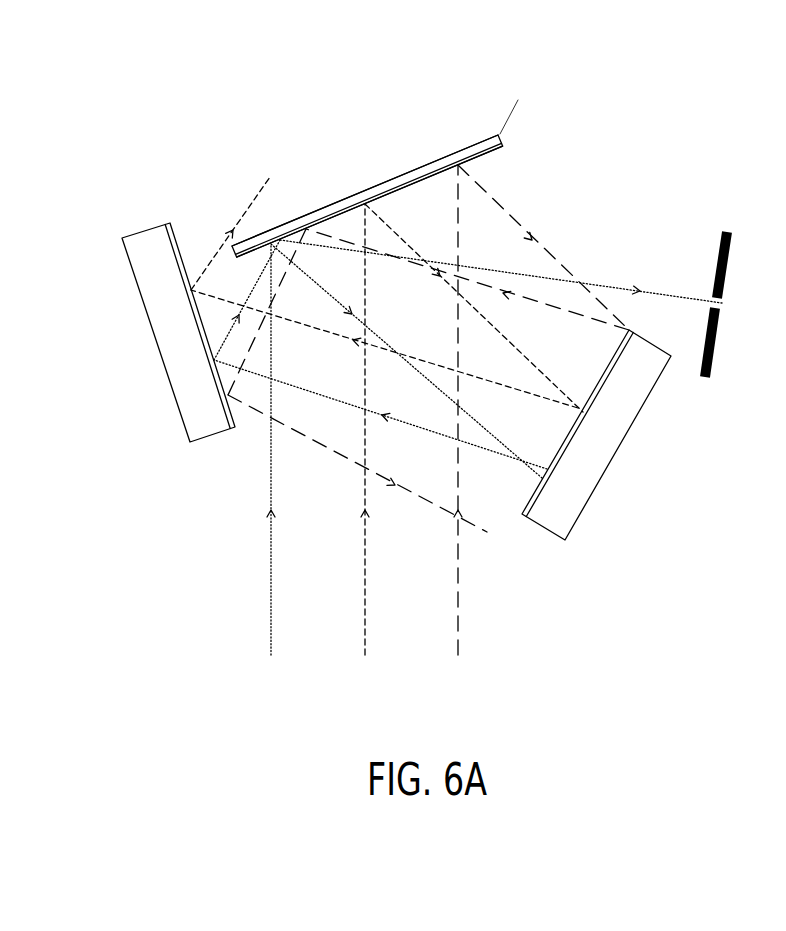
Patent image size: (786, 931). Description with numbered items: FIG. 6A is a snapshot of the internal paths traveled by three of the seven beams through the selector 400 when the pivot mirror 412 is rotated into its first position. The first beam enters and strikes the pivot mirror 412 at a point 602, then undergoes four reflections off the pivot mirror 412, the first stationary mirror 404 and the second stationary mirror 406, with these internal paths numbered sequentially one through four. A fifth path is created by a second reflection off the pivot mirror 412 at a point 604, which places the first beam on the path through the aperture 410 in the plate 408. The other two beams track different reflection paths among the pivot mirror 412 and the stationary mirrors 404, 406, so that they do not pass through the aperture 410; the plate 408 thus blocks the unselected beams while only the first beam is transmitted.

The selector 400 is at (327, 102).
The pivot mirror 412 is at (446, 156).
The point 602 is at (282, 231).
The point 604 is at (298, 251).
The second stationary mirror 406 is at (176, 373).
The first stationary mirror 404 is at (612, 450).
The plate 408 is at (710, 360).
The aperture 410 is at (712, 301).